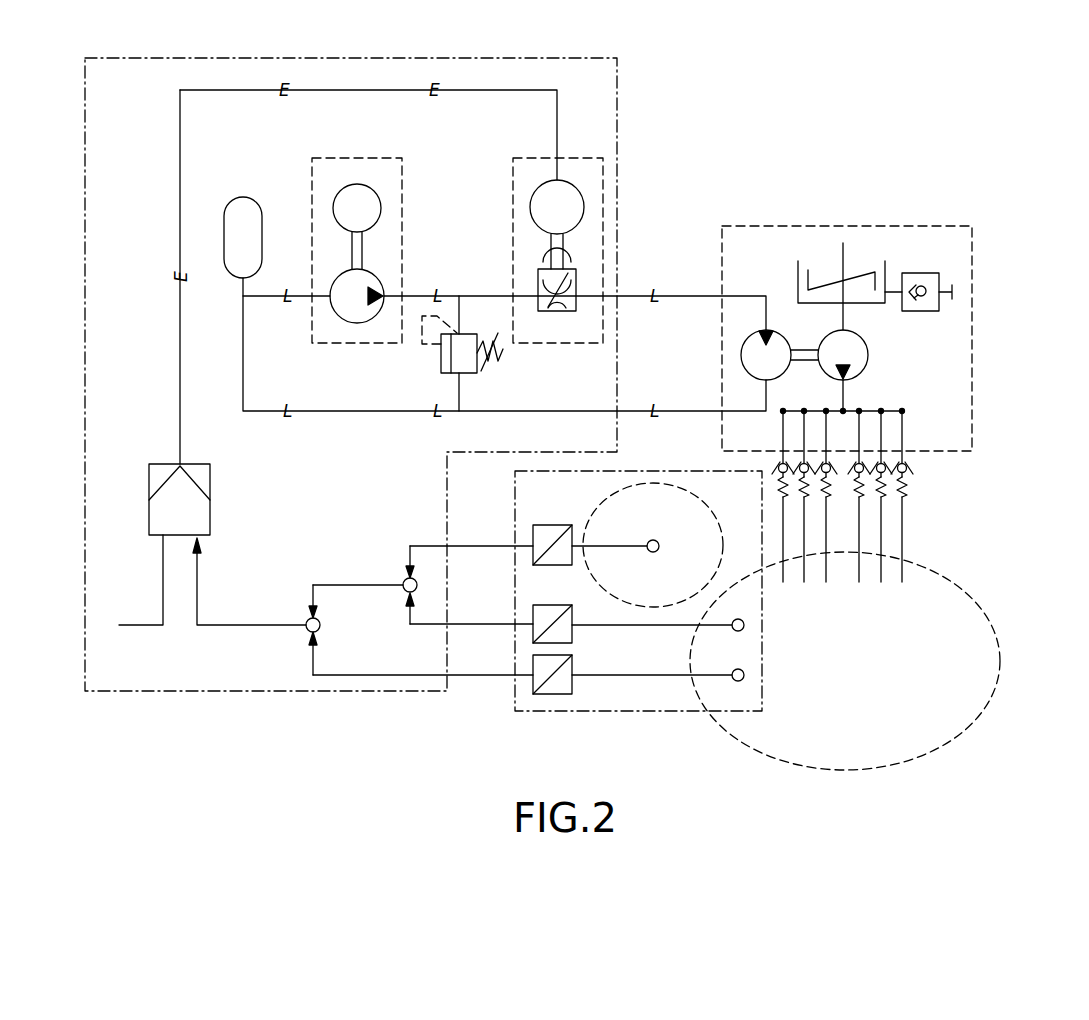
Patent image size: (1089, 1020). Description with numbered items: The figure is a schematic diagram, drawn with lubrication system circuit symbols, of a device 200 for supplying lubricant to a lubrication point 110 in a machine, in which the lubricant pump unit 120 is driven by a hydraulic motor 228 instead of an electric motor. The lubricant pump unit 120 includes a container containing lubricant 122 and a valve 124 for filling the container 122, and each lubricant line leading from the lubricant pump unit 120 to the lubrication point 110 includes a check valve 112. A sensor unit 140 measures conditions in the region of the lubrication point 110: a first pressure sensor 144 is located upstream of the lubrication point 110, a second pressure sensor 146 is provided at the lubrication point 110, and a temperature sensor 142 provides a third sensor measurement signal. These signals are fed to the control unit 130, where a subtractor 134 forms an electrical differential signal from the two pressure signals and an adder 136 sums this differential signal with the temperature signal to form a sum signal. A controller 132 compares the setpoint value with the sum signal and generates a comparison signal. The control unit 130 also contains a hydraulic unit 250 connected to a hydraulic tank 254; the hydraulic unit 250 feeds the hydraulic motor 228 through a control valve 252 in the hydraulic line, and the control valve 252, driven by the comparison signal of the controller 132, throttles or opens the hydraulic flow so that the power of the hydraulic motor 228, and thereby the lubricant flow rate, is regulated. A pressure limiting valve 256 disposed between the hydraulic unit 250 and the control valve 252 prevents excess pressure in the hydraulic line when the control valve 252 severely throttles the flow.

The device for supplying lubricant 200 is at (778, 144).
The lubrication point 110 is at (985, 705).
The check valve 112 is at (906, 486).
The lubricant pump unit 120 is at (972, 365).
The container containing lubricant 122 is at (888, 278).
The valve for filling the container 124 is at (928, 272).
The control unit 130 is at (183, 691).
The controller 132 is at (210, 505).
The subtractor 134 is at (395, 578).
The adder 136 is at (306, 630).
The sensor unit 140 is at (623, 711).
The temperature sensor 142 is at (553, 694).
The first pressure sensor 144 is at (648, 540).
The second pressure sensor 146 is at (739, 631).
The hydraulic motor 228 is at (743, 372).
The hydraulic unit 250 is at (381, 205).
The control valve 252 is at (603, 176).
The hydraulic tank 254 is at (231, 279).
The pressure limiting valve 256 is at (441, 368).